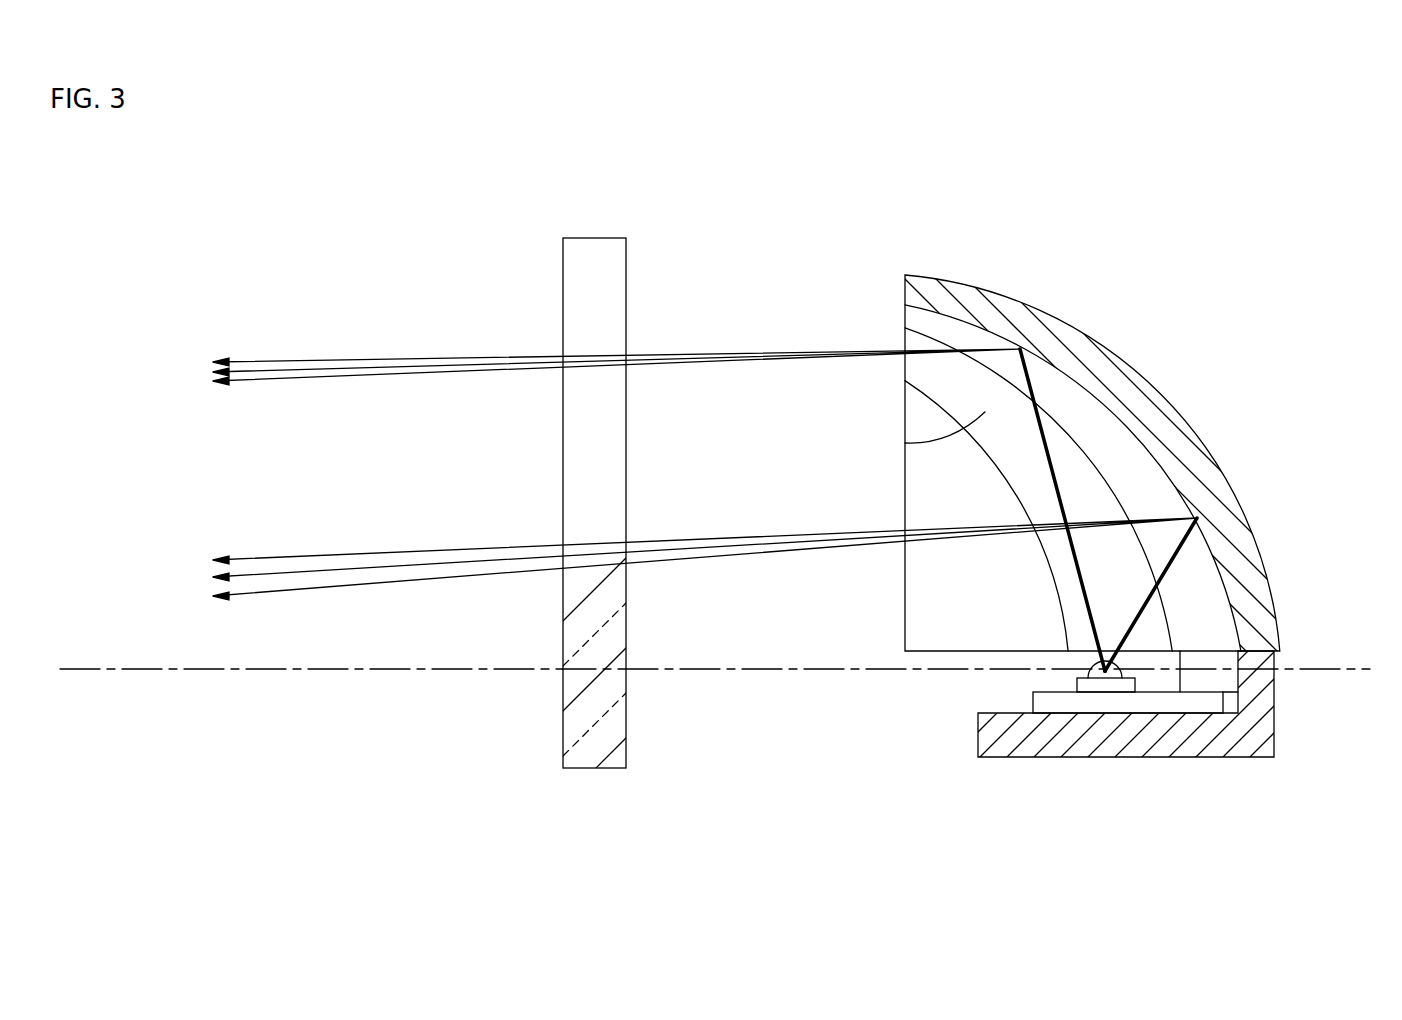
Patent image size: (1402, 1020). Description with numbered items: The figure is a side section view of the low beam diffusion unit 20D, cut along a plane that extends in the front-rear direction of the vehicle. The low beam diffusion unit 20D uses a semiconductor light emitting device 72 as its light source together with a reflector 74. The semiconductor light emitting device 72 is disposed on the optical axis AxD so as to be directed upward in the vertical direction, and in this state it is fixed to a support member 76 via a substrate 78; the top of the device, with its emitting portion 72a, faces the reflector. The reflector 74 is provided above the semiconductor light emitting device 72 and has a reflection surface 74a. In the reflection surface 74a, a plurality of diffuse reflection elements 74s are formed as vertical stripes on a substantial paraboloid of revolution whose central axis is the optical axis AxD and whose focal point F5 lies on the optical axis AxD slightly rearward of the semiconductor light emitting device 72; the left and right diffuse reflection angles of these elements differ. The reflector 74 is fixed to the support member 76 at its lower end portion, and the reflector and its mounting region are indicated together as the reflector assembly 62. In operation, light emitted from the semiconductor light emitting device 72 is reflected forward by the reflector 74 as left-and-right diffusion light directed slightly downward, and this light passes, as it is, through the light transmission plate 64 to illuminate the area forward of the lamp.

The low beam diffusion unit 20D is at (1045, 142).
The lens unit 62 is at (849, 283).
The light transmission plate 64 is at (564, 266).
The semiconductor light emitting device 72 is at (1133, 665).
The light emitting surface 72a is at (1092, 669).
The reflector 74 is at (1191, 424).
The reflection surface 74a is at (1112, 426).
The diffuse reflection elements 74s is at (918, 410).
The support member 76 is at (1055, 757).
The substrate 78 is at (1167, 703).
The focal point F5 is at (1107, 660).
The optical axis AxD is at (80, 666).